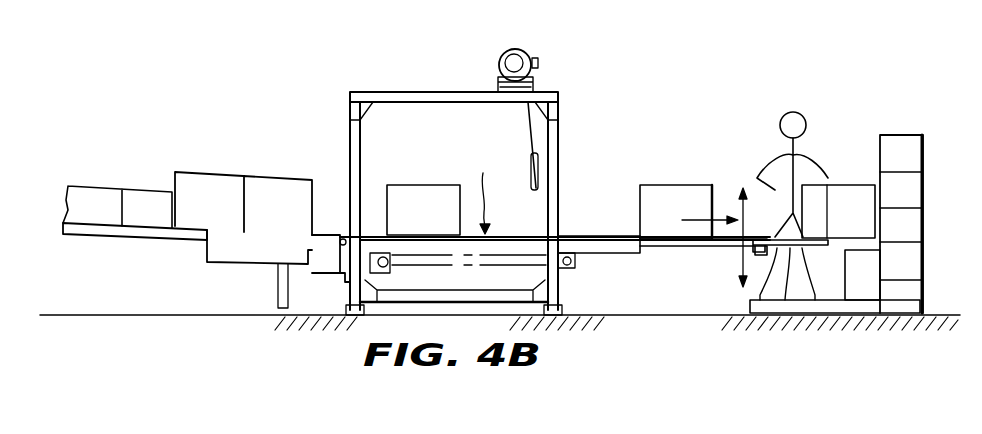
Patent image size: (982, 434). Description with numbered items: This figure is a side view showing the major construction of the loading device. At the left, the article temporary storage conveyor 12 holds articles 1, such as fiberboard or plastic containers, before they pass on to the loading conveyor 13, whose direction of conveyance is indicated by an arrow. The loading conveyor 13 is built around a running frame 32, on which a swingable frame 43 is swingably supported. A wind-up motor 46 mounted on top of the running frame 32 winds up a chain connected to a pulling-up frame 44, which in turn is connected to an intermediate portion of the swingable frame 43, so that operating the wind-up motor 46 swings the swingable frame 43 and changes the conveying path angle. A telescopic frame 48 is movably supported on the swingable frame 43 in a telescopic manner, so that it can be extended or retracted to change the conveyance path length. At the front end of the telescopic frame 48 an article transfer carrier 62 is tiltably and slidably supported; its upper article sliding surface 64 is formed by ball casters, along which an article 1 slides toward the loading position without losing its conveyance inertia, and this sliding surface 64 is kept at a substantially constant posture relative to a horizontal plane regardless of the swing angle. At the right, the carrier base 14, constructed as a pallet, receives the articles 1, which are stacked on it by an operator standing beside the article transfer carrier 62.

The article 1 is at (923, 148).
The article temporary storage conveyor 12 is at (150, 242).
The loading conveyor 13 is at (482, 187).
The carrier base 14 is at (900, 303).
The running frame 32 is at (558, 135).
The swingable frame 43 is at (605, 253).
The pulling-up frame 44 is at (540, 190).
The wind-up motor 46 is at (502, 55).
The telescopic frame 48 is at (695, 246).
The article transfer carrier 62 is at (779, 300).
The article sliding surface 64 is at (775, 238).